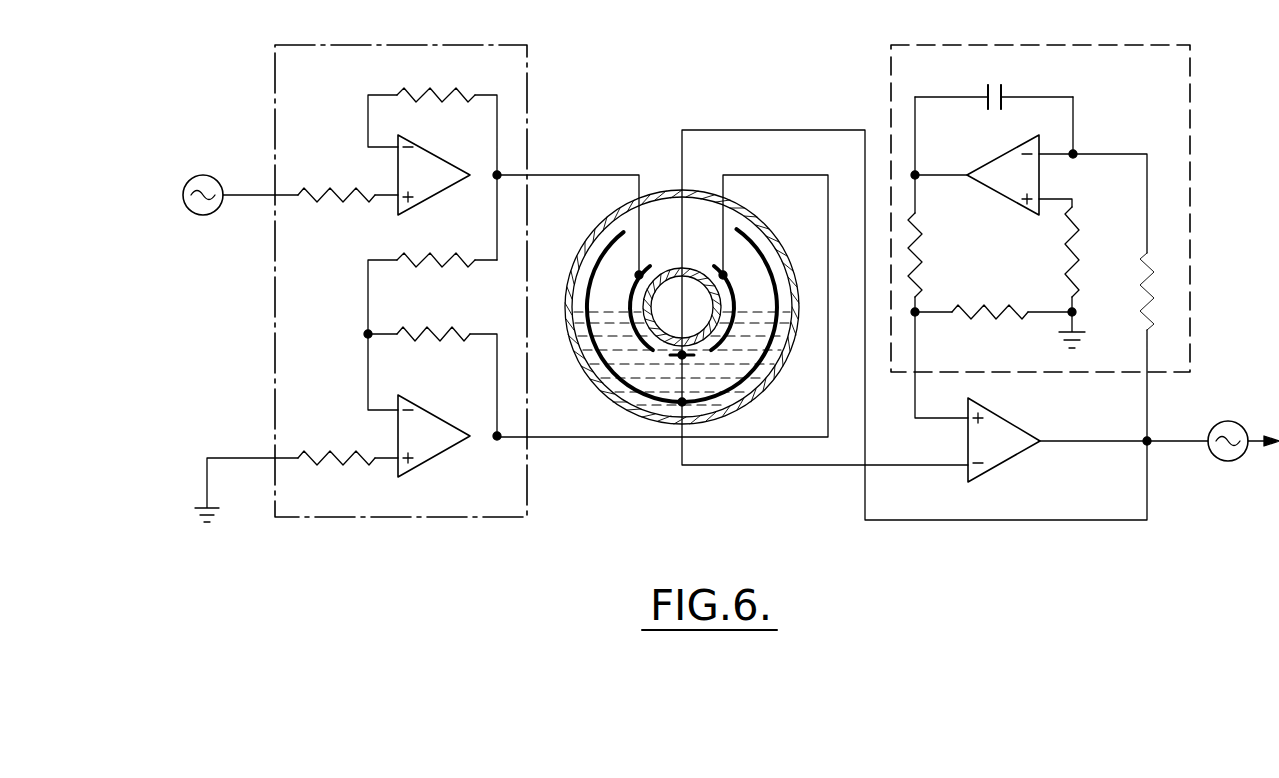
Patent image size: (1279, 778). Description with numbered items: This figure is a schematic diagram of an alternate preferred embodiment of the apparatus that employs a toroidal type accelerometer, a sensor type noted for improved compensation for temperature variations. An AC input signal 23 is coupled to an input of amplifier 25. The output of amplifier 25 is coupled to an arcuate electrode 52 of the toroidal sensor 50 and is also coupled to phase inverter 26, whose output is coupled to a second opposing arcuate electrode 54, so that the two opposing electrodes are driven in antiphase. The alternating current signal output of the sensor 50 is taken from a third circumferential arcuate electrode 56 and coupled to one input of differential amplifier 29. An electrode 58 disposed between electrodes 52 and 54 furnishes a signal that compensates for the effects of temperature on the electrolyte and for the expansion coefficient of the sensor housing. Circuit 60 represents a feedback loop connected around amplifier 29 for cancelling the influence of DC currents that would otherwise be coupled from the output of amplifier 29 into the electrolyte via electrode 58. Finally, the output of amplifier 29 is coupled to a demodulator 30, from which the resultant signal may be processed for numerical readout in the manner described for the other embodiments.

The AC input signal 23 is at (210, 216).
The amplifier 25 is at (432, 152).
The phase inverter 26 is at (432, 412).
The differential amplifier 29 is at (1003, 417).
The demodulator 30 is at (1222, 462).
The toroidal sensor 50 is at (658, 188).
The arcuate electrode 52 is at (633, 296).
The second opposing arcuate electrode 54 is at (732, 296).
The third circumferential arcuate electrode 56 is at (630, 240).
The electrode 58 is at (693, 358).
The circuit 60 is at (1082, 44).